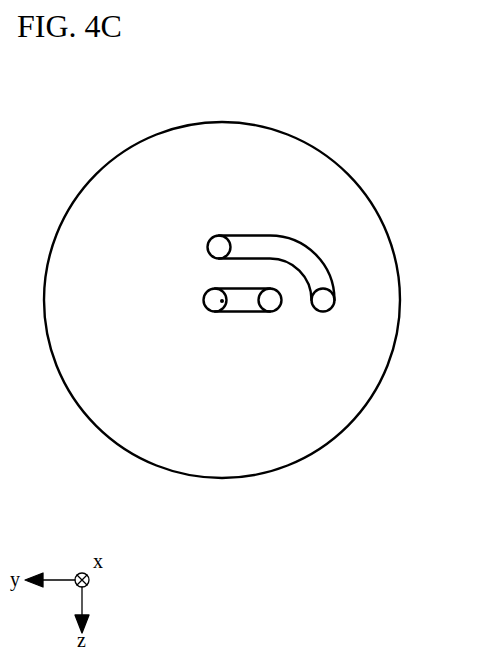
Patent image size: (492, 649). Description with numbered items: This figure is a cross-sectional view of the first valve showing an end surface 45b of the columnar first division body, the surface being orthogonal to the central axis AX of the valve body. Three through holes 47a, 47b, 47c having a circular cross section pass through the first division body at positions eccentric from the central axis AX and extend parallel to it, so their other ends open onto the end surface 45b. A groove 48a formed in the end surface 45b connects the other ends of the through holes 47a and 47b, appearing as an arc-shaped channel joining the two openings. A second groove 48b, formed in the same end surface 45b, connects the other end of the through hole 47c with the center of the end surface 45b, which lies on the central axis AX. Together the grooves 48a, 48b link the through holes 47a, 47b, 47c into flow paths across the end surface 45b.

The end surface 45b is at (300, 168).
The through hole 47a is at (219, 247).
The through hole 47b is at (338, 298).
The through hole 47c is at (268, 298).
The groove 48a is at (300, 259).
The groove 48b is at (233, 313).
The central axis AX is at (205, 289).